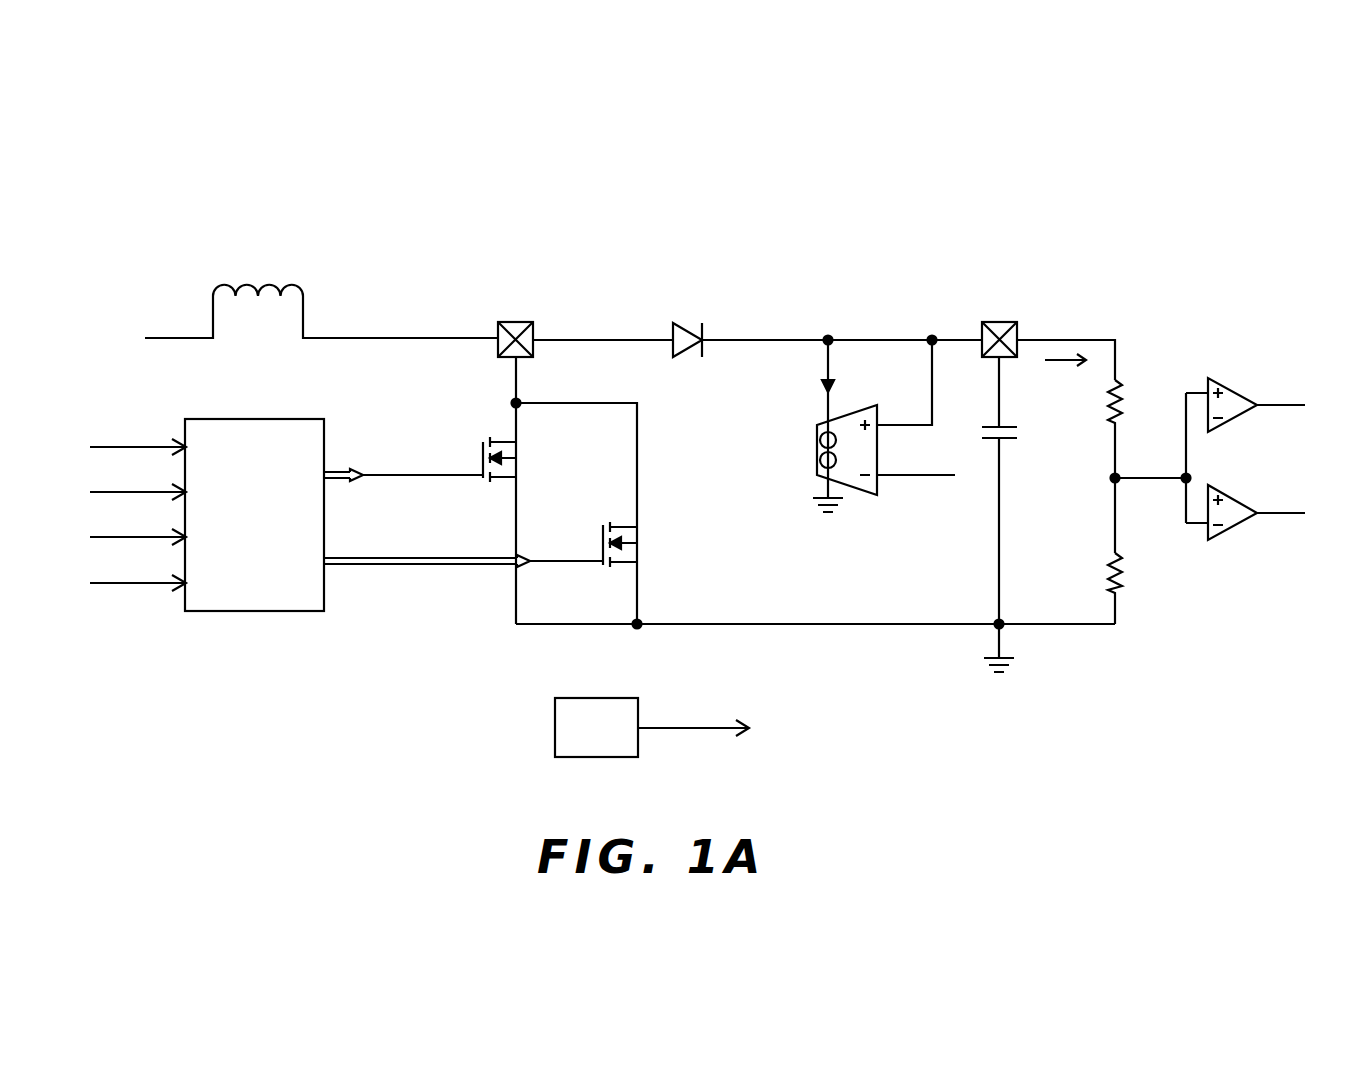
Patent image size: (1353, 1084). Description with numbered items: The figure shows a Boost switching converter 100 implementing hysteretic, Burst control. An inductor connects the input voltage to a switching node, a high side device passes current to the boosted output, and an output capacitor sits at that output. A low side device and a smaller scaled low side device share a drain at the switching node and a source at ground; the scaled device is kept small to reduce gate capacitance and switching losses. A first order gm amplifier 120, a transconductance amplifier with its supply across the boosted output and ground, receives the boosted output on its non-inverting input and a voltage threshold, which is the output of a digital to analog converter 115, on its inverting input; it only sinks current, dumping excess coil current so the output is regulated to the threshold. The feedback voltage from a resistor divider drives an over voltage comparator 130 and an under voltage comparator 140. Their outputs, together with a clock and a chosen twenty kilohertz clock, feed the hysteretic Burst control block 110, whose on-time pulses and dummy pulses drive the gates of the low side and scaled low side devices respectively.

The Boost switching converter 100 is at (278, 158).
The hysteretic Burst CONTROL 110 is at (247, 418).
The digital to analog converter (DAC) 115 is at (580, 698).
The gm amplifier 120 is at (855, 407).
The over voltage comparator 130 is at (1232, 386).
The under voltage comparator 140 is at (1230, 535).